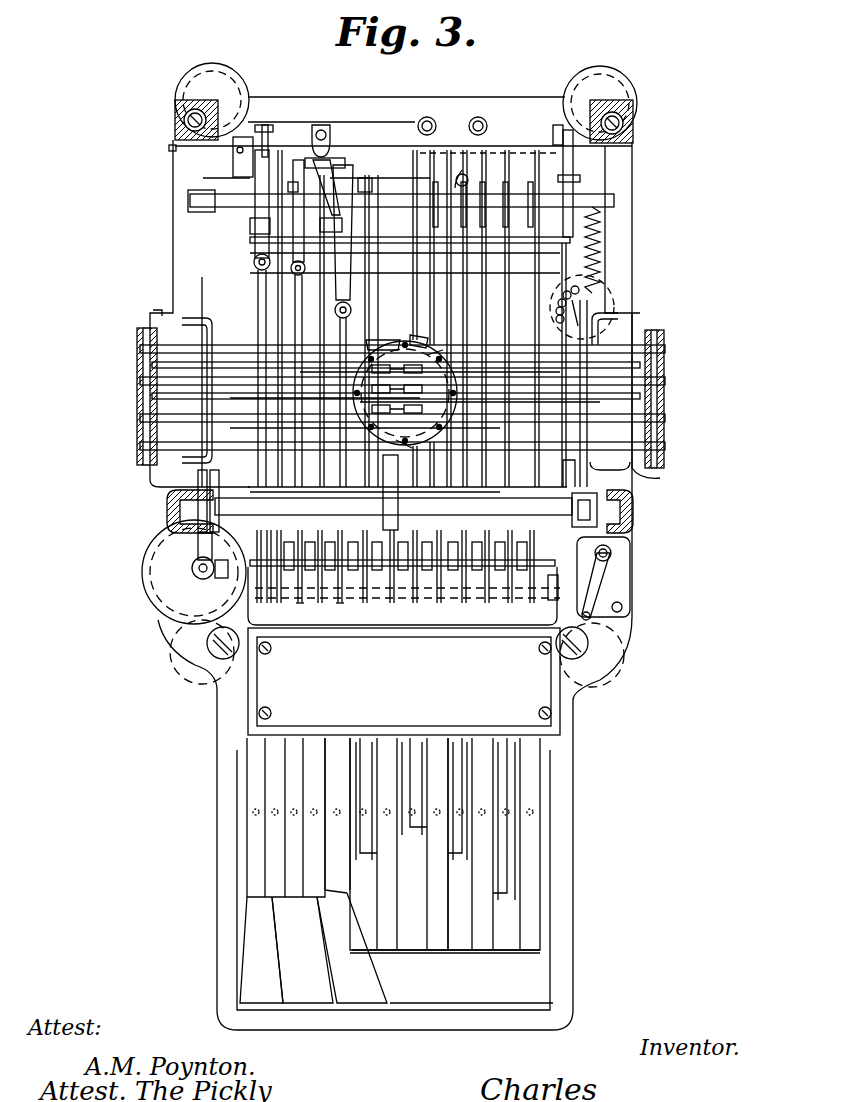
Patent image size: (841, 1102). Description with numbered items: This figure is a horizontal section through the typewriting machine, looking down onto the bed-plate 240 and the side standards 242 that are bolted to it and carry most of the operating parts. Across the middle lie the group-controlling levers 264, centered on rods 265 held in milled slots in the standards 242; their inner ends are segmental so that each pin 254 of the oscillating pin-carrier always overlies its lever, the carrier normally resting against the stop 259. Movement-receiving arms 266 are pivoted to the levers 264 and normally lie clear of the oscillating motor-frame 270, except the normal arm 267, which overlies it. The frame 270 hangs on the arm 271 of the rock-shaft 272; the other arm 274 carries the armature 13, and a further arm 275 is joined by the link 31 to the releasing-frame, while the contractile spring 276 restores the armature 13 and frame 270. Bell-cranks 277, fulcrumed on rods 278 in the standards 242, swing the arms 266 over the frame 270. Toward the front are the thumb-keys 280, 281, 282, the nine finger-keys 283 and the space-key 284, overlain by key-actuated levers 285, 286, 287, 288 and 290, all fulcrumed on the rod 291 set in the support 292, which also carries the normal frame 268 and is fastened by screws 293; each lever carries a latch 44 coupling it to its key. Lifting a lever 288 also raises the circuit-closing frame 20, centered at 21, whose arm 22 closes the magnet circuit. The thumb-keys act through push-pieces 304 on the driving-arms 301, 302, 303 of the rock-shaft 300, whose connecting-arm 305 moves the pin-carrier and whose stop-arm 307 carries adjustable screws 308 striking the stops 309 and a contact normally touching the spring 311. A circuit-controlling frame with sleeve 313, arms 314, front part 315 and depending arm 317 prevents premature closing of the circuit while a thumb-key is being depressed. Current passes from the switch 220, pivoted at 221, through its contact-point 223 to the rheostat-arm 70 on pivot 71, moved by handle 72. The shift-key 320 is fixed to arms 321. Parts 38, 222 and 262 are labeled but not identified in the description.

The armature 13 is at (170, 573).
The circuit-closing frame 20 is at (498, 145).
The center of circuit-closing frame 21 is at (170, 148).
The arm of circuit-closing frame 22 is at (570, 172).
The link 31 is at (620, 290).
The bracket 38 is at (568, 177).
The releasing arm or latch 44 is at (506, 188).
The rheostat-arm 70 is at (573, 317).
The pivot of rheostat-arm 71 is at (620, 303).
The handle 72 is at (608, 283).
The switch 220 is at (600, 572).
The pivot of switch 221 is at (612, 550).
The pin 222 is at (580, 617).
The contact-point 223 is at (588, 603).
The bed-plate 240 is at (268, 105).
The side standards 242 is at (176, 108).
The pins 254 is at (424, 443).
The stop 259 is at (434, 358).
The rod 262 is at (150, 420).
The group-controlling levers 264 is at (140, 350).
The rods 265 is at (147, 468).
The movement-receiving arms 266 is at (403, 342).
The normal movement-receiving arm 267 is at (419, 333).
The normal frame 268 is at (478, 560).
The oscillating frame (motor-frame) 270 is at (376, 332).
The arm of rock-shaft 271 is at (396, 509).
The rock-shaft 272 is at (393, 492).
The arm of rock-shaft 274 is at (221, 507).
The arm of rock-shaft 275 is at (572, 509).
The contractile spring 276 is at (595, 230).
The bell-cranks 277 is at (259, 340).
The rods 278 is at (158, 315).
The thumb-key 280 is at (370, 998).
The thumb-key 281 is at (307, 998).
The thumb-key 282 is at (255, 975).
The finger-keys 283 is at (277, 883).
The space-key 284 is at (460, 847).
The key-actuated lever 285 is at (338, 607).
The key-actuated lever 286 is at (297, 607).
The key-actuated lever 287 is at (252, 576).
The key-actuated levers 288 is at (390, 607).
The key-actuated lever 290 is at (462, 607).
The rod 291 is at (556, 598).
The support 292 is at (498, 732).
The screws 293 is at (216, 648).
The rock-shaft 300 is at (207, 232).
The driving-arm 301 is at (338, 298).
The driving-arm 302 is at (292, 280).
The driving-arm 303 is at (254, 262).
The push-pieces 304 is at (252, 275).
The connecting-arm 305 is at (355, 187).
The stop-arm 307 is at (328, 172).
The screws 308 is at (352, 186).
The stops 309 is at (316, 187).
The contact-spring 311 is at (330, 160).
The sleeve 313 is at (290, 143).
The forward-extending arms 314 is at (250, 167).
The front part 315 is at (258, 232).
The depending arm 317 is at (265, 125).
The shift-key 320 is at (455, 1012).
The arms 321 is at (383, 952).